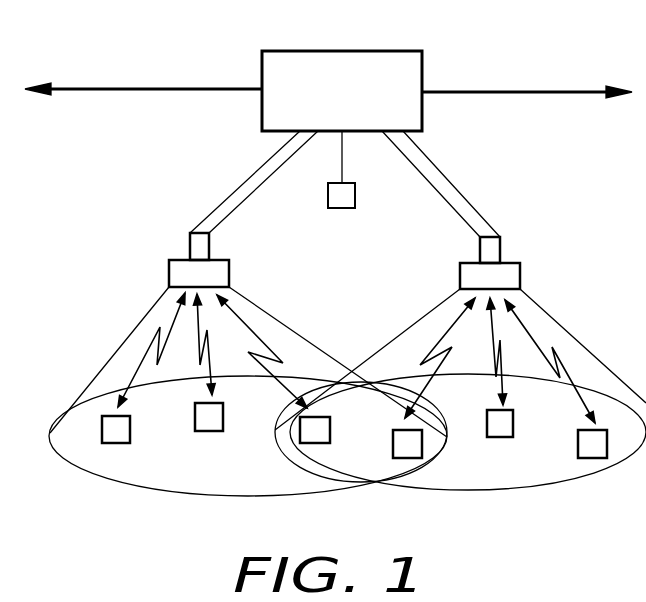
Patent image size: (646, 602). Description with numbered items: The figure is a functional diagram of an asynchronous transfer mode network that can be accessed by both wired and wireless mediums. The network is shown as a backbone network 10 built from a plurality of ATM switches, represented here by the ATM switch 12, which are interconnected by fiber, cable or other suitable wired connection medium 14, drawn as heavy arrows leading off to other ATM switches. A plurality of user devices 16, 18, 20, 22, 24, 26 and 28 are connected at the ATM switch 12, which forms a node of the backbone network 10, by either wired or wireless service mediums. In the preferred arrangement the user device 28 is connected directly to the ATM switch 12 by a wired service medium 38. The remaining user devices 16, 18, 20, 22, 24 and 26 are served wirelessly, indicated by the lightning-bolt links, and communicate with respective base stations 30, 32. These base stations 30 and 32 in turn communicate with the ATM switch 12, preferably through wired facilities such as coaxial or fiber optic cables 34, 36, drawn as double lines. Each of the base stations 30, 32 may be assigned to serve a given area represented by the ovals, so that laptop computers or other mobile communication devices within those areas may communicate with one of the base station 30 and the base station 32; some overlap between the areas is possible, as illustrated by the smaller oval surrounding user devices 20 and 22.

The backbone network 10 is at (138, 135).
The ATM switch 12 is at (290, 50).
The wired connection medium 14 is at (72, 93).
The user device 16 is at (102, 428).
The user device 18 is at (195, 417).
The user device 20 is at (300, 430).
The user device 22 is at (393, 442).
The user device 24 is at (487, 430).
The user device 26 is at (578, 435).
The user device 28 is at (323, 212).
The base station 30 is at (172, 258).
The base station 32 is at (512, 258).
The cable 34 is at (440, 167).
The cable 36 is at (250, 174).
The wired service medium 38 is at (340, 167).